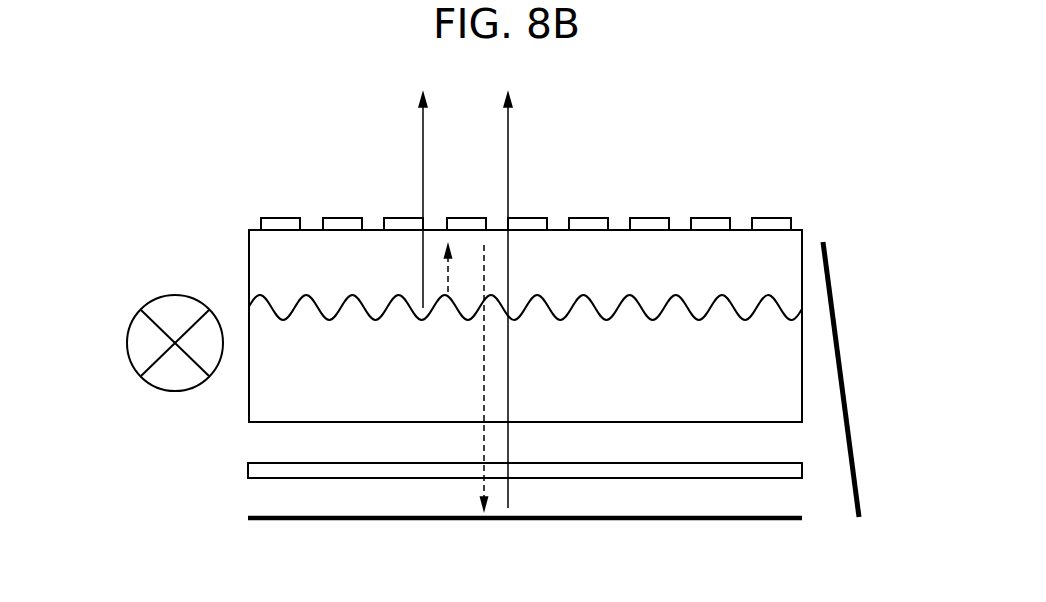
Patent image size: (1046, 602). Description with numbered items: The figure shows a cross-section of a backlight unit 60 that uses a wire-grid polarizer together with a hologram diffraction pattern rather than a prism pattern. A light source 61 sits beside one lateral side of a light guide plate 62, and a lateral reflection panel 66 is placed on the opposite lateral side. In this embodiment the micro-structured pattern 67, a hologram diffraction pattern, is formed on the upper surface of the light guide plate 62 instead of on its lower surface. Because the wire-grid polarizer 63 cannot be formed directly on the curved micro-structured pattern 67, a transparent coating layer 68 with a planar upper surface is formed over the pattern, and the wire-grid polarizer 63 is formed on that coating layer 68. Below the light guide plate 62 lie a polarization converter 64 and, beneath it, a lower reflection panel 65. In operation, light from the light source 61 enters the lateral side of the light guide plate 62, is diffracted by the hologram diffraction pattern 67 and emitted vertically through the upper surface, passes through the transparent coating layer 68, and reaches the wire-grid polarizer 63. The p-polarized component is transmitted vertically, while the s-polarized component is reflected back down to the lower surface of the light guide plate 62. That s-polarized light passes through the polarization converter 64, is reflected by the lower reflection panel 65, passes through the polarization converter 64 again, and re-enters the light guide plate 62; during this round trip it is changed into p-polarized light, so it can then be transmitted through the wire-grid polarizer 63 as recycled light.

The backlight unit 60 is at (539, 582).
The light source 61 is at (127, 342).
The light guide plate 62 is at (262, 398).
The wire-grid polarizer 63 is at (772, 218).
The polarization converter 64 is at (248, 470).
The lower reflection panel 65 is at (280, 517).
The lateral reflection panel 66 is at (843, 383).
The micro-structured pattern 67 is at (265, 310).
The transparent coating layer 68 is at (263, 263).